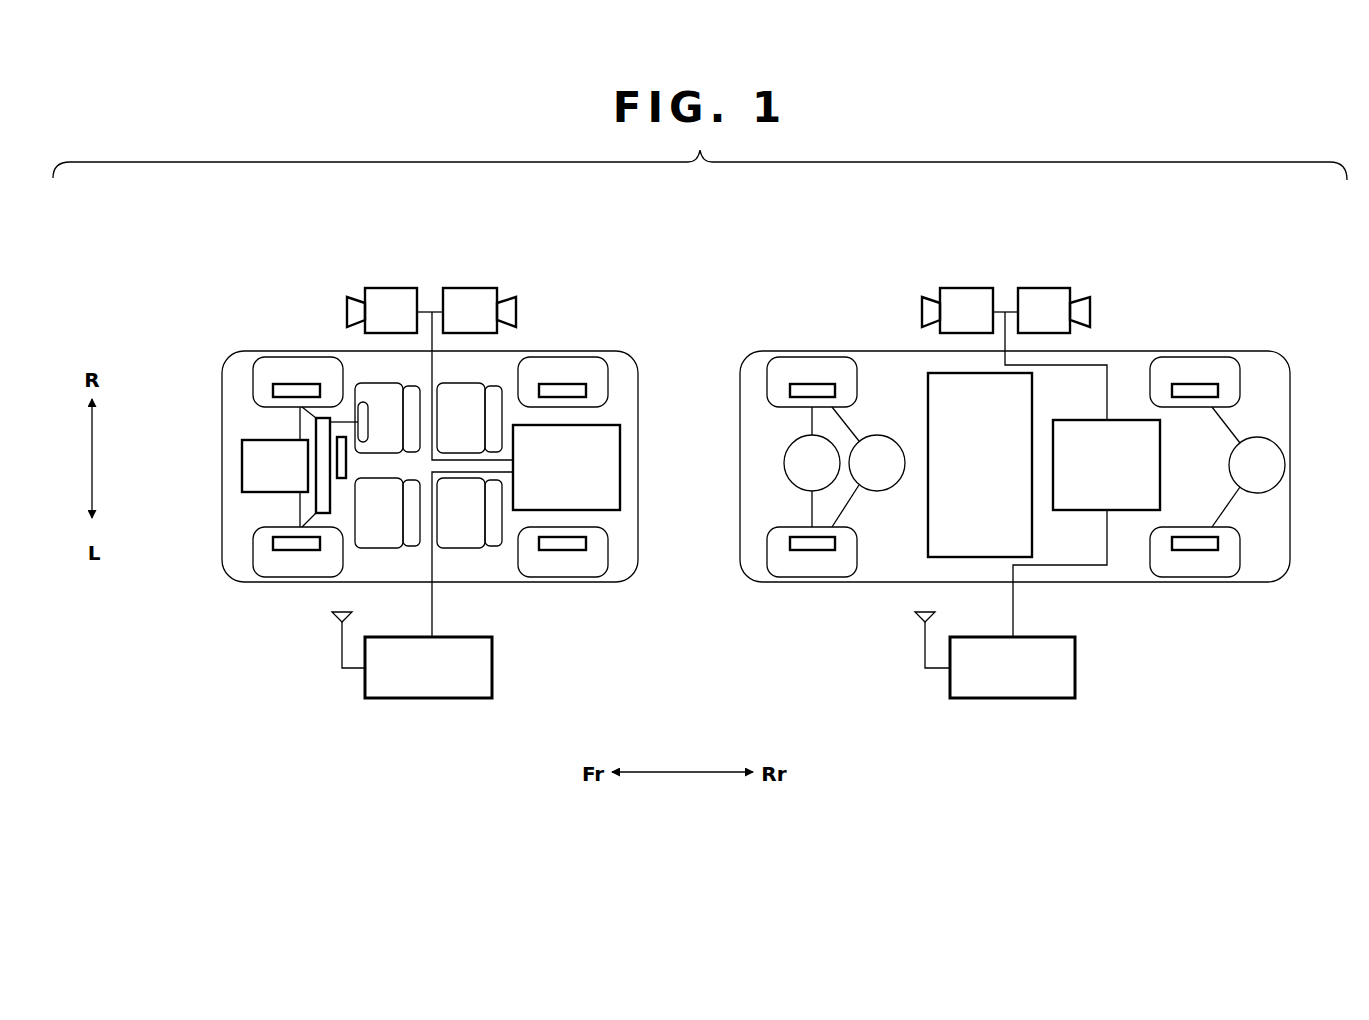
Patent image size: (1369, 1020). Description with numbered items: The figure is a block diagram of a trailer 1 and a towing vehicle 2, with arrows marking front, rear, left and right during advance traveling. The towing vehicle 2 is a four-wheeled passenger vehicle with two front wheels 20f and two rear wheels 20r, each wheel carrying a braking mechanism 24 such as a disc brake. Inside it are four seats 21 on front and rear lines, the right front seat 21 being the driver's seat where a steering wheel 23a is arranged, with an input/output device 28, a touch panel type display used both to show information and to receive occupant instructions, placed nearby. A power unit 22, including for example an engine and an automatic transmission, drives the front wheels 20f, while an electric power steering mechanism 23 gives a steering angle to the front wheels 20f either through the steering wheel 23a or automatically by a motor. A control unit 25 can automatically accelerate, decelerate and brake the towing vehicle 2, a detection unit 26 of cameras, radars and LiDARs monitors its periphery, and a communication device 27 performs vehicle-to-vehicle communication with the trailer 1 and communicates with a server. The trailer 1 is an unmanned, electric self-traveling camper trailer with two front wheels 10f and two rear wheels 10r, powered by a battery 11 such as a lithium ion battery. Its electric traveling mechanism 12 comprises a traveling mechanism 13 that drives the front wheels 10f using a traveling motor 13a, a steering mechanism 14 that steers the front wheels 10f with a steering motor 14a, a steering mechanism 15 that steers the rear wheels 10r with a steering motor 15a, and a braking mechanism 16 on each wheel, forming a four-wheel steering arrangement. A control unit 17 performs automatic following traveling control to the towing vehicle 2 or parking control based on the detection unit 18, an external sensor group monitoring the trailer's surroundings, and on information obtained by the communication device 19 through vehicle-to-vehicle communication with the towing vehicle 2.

The trailer 1 is at (983, 457).
The towing vehicle 2 is at (592, 303).
The front wheels 10f is at (807, 358).
The rear wheels 10r is at (1162, 357).
The battery 11 is at (1033, 540).
The electric traveling mechanism 12 is at (757, 382).
The traveling mechanism 13 is at (793, 459).
The traveling motor 13a is at (785, 462).
The steering mechanism 14 is at (863, 415).
The steering motor 14a is at (878, 492).
The steering mechanism 15 is at (1238, 418).
The steering motor 15a is at (1232, 483).
The braking mechanism 16 is at (826, 383).
The control unit (ECU) 17 is at (1161, 464).
The detection unit 18 is at (1052, 280).
The communication device 19 is at (1075, 660).
The front wheels 20f is at (261, 357).
The rear wheels 20r is at (605, 358).
The seats 21 is at (391, 385).
The power unit (PU) 22 is at (242, 466).
The electric power steering mechanism 23 is at (315, 433).
The steering wheel 23a is at (361, 402).
The braking mechanism 24 is at (275, 390).
The control unit (ECU) 25 is at (621, 437).
The detection unit 26 is at (478, 281).
The communication device 27 is at (492, 668).
The input/output device 28 is at (347, 461).